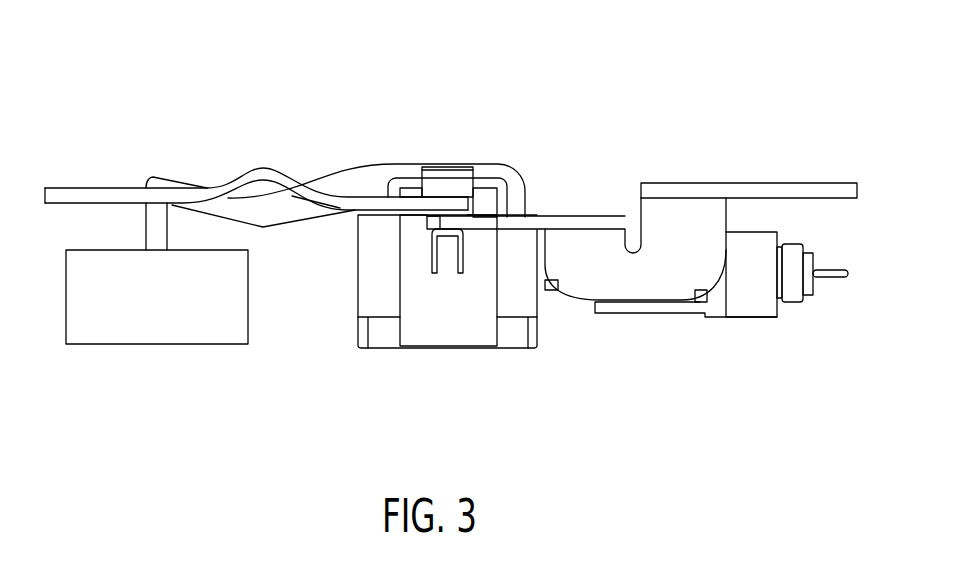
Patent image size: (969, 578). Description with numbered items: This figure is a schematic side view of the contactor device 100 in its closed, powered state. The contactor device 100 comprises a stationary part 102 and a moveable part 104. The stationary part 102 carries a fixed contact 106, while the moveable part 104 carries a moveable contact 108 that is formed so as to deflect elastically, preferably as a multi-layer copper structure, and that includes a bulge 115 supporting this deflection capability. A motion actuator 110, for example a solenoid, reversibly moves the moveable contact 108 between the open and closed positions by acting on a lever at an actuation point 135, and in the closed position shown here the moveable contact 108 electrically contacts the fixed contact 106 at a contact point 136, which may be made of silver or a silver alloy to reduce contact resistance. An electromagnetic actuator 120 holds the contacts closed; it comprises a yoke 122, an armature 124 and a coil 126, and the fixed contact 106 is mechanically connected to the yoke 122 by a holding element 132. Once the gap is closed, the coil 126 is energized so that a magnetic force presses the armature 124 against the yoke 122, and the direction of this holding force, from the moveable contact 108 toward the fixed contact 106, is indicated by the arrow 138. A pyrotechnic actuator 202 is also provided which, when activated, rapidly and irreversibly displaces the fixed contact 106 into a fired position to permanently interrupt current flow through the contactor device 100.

The contactor device 100 is at (571, 78).
The stationary part 102 is at (701, 298).
The moveable part 104 is at (256, 278).
The fixed contact 106 is at (587, 222).
The moveable contact 108 is at (414, 161).
The motion actuator 110 is at (82, 333).
The bulge 115 is at (247, 178).
The electromagnetic actuator 120 is at (447, 321).
The yoke 122 is at (472, 335).
The armature 124 is at (487, 198).
The coil 126 is at (523, 302).
The holding element 132 is at (427, 266).
The actuation point 135 is at (152, 178).
The contact point 136 is at (427, 214).
The arrow 138 is at (442, 63).
The pyrotechnic actuator 202 is at (748, 302).